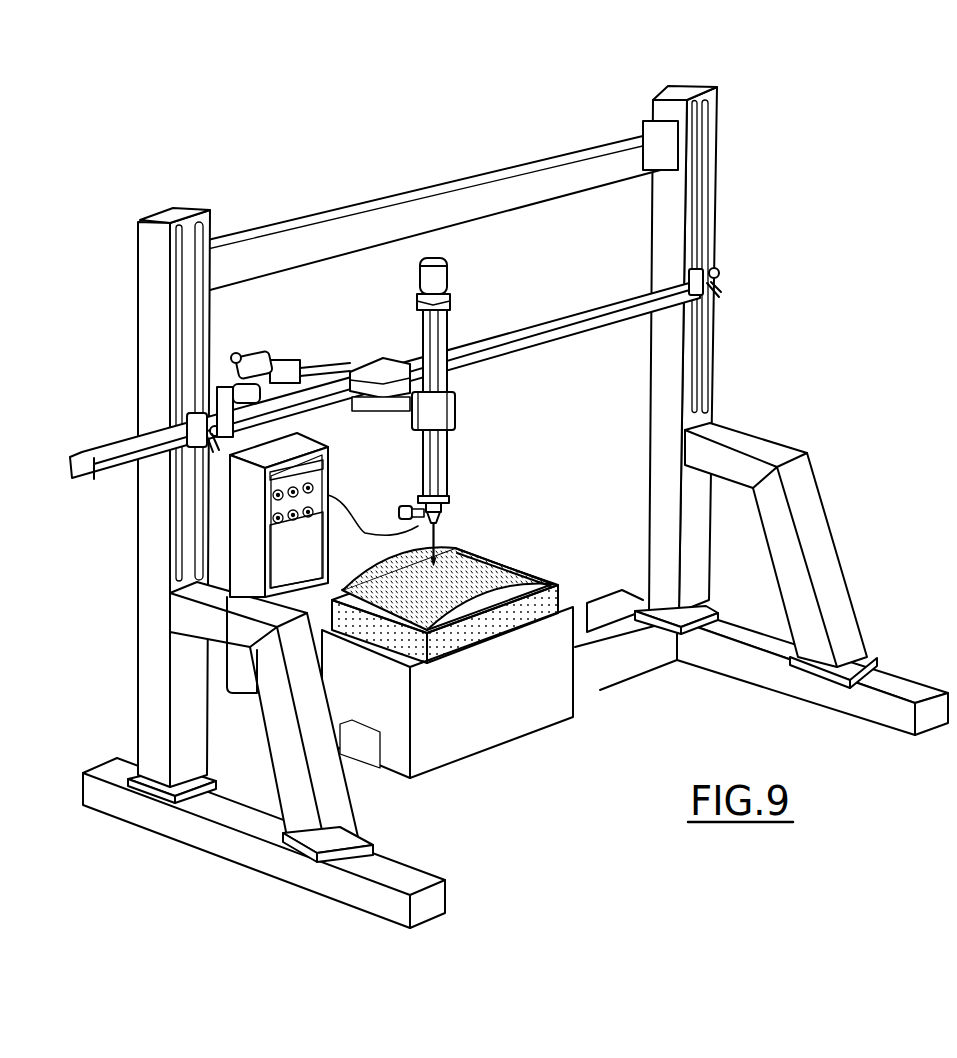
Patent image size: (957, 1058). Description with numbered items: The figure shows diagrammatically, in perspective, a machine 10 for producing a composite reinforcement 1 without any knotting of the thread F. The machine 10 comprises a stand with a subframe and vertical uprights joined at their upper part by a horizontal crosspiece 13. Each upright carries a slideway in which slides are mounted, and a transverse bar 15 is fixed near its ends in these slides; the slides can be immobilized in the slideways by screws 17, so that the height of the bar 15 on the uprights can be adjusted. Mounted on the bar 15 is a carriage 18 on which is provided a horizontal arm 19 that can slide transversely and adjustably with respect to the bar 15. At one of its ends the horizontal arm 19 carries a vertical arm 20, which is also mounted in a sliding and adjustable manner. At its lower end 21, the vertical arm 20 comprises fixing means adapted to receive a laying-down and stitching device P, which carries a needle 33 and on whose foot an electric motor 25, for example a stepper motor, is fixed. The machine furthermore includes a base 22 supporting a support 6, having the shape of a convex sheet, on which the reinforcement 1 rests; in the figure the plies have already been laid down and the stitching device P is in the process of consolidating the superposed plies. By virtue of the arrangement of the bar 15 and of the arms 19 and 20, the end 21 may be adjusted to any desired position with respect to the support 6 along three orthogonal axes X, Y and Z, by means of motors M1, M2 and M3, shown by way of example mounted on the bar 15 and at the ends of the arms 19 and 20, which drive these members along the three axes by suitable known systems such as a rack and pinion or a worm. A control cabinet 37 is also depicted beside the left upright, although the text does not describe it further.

The reinforcement 1 is at (467, 608).
The support 6 is at (460, 633).
The machine 10 is at (497, 507).
The horizontal crosspiece 13 is at (378, 199).
The transverse bar 15 is at (548, 330).
The screws 17 is at (720, 290).
The carriage 18 is at (377, 362).
The horizontal arm 19 is at (288, 360).
The vertical arm 20 is at (458, 364).
The lower end 21 is at (440, 482).
The base 22 is at (497, 725).
The electric motor 25 is at (400, 515).
The needle 33 is at (440, 550).
The control unit 37 is at (240, 515).
The motor M1 is at (280, 397).
The motor M2 is at (233, 352).
The motor M3 is at (440, 280).
The thread F is at (373, 527).
The laying-down and stitching device P is at (460, 520).
The axis X is at (500, 313).
The axis Y is at (295, 341).
The axis Z is at (467, 395).